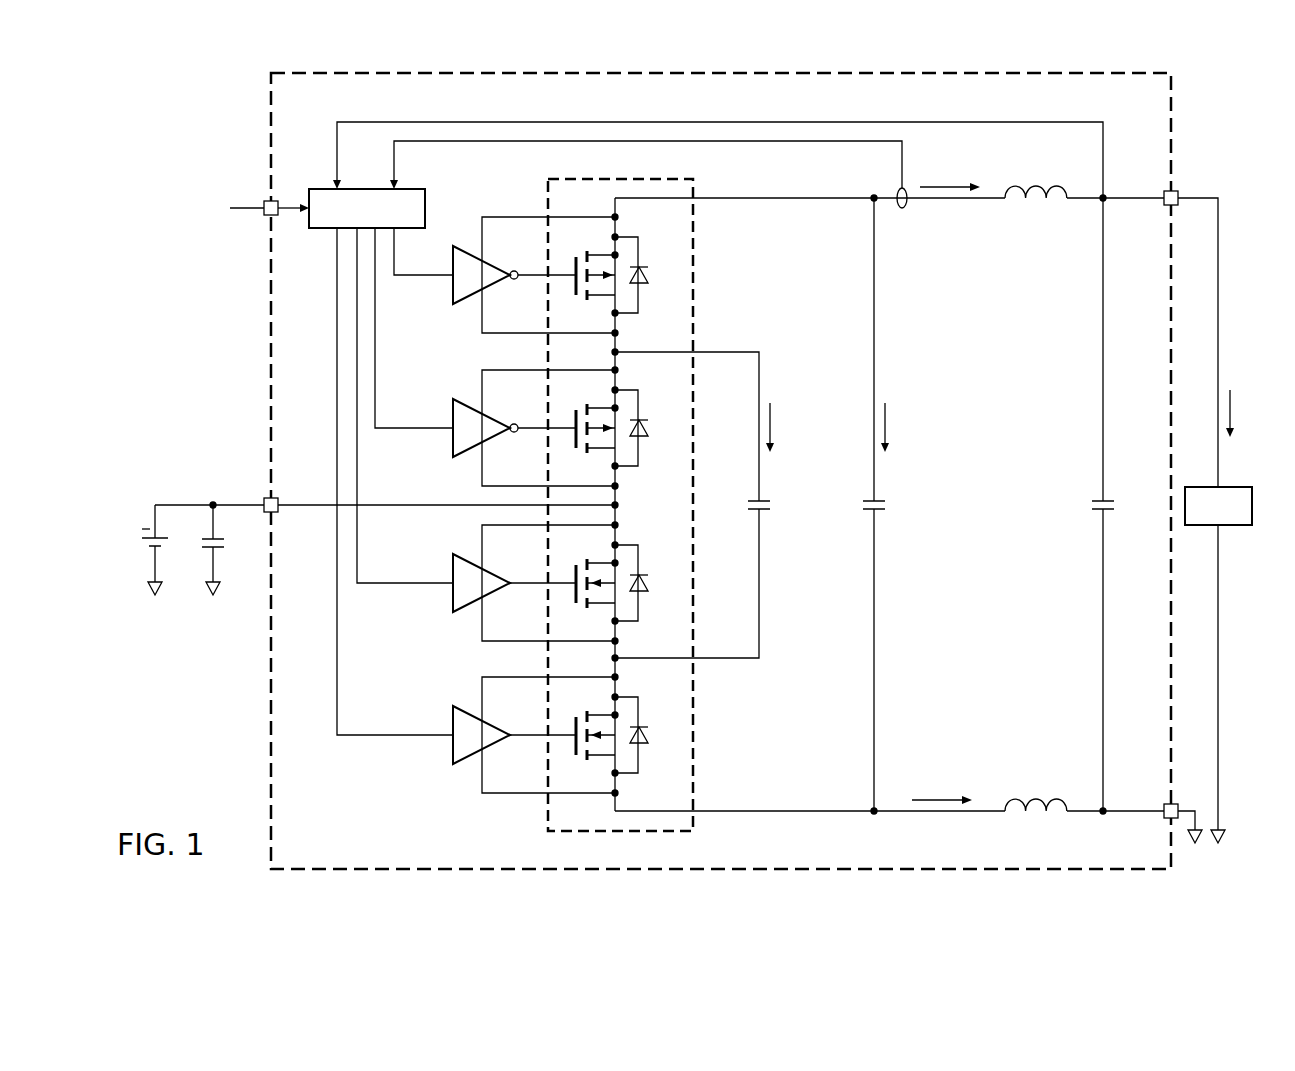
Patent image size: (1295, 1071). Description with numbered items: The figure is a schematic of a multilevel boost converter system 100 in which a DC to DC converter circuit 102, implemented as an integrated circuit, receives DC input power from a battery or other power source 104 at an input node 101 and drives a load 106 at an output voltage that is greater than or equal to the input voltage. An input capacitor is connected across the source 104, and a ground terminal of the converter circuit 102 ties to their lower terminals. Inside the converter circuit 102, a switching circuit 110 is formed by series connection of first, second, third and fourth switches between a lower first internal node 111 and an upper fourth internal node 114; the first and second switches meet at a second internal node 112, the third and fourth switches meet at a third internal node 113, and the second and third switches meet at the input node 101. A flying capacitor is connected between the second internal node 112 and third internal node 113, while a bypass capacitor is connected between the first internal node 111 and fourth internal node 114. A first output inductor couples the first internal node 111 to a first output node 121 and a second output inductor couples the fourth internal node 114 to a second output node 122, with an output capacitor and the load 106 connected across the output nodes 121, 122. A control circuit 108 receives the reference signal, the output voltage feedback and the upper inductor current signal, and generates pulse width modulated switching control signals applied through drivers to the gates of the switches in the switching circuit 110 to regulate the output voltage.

The multilevel boost converter system 100 is at (130, 281).
The input node 101 is at (308, 503).
The DC to DC converter circuit 102 is at (258, 124).
The power source 104 is at (128, 516).
The load 106 is at (1235, 527).
The control circuit 108 is at (425, 198).
The switching circuit 110 is at (702, 251).
The first internal node 111 is at (783, 813).
The second internal node 112 is at (760, 583).
The third internal node 113 is at (760, 382).
The fourth internal node 114 is at (782, 197).
The first output node 121 is at (1083, 813).
The second output node 122 is at (1105, 197).